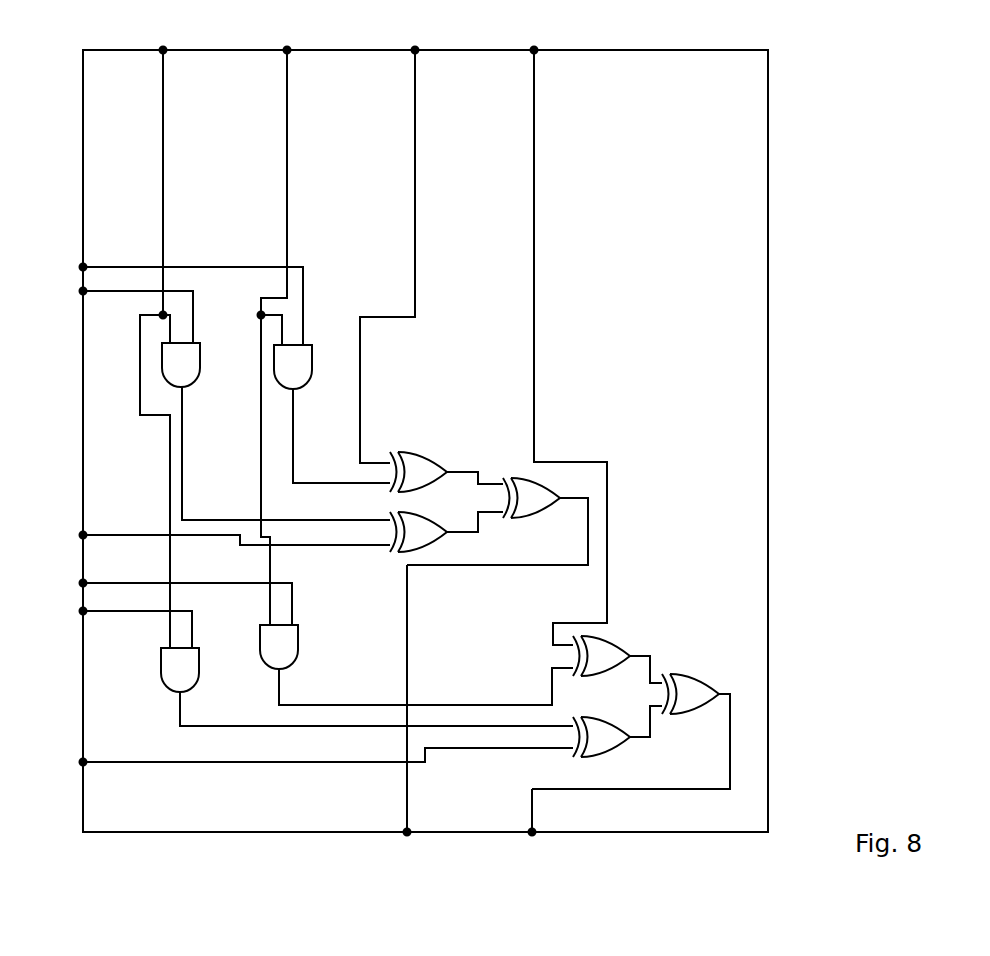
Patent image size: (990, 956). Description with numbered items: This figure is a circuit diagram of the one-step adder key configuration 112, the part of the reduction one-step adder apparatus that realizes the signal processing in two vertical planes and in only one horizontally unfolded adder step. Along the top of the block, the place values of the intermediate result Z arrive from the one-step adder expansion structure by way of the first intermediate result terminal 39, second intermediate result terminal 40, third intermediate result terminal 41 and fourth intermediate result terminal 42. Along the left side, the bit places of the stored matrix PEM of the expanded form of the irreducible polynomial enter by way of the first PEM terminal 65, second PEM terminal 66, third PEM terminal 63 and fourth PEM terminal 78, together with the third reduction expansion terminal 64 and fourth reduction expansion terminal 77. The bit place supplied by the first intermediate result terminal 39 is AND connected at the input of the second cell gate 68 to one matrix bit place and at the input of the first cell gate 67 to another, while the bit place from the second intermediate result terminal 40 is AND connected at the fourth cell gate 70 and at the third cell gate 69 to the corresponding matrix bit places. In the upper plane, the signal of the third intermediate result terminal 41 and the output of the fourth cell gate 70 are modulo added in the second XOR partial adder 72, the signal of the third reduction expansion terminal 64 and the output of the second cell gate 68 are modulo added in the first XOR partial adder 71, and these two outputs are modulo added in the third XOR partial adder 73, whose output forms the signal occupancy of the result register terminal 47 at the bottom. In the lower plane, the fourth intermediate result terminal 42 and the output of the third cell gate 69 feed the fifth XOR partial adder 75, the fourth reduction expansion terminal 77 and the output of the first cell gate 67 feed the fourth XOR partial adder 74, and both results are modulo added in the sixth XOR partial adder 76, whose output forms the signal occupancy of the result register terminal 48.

The one-step adder key configuration 112 is at (425, 441).
The first intermediate result terminal 39 is at (161, 332).
The second intermediate result terminal 40 is at (283, 321).
The third intermediate result terminal 41 is at (398, 240).
The fourth intermediate result terminal 42 is at (564, 331).
The result register terminal E(n-1) 47 is at (407, 714).
The result register terminal E(n-2) 48 is at (532, 826).
The third PEM terminal 63 is at (168, 596).
The third reduction expansion terminal 64 is at (217, 534).
The first PEM terminal 65 is at (118, 309).
The second PEM terminal 66 is at (173, 298).
The fourth reduction expansion terminal 77 is at (308, 761).
The fourth PEM terminal 78 is at (118, 622).
The first cell gate 67 is at (367, 687).
The second cell gate 68 is at (276, 431).
The third cell gate 69 is at (416, 665).
The fourth cell gate 70 is at (332, 414).
The first XOR partial adder 71 is at (446, 529).
The second XOR partial adder 72 is at (446, 468).
The third XOR partial adder 73 is at (497, 521).
The fourth XOR partial adder 74 is at (617, 730).
The fifth XOR partial adder 75 is at (617, 653).
The sixth XOR partial adder 76 is at (641, 727).